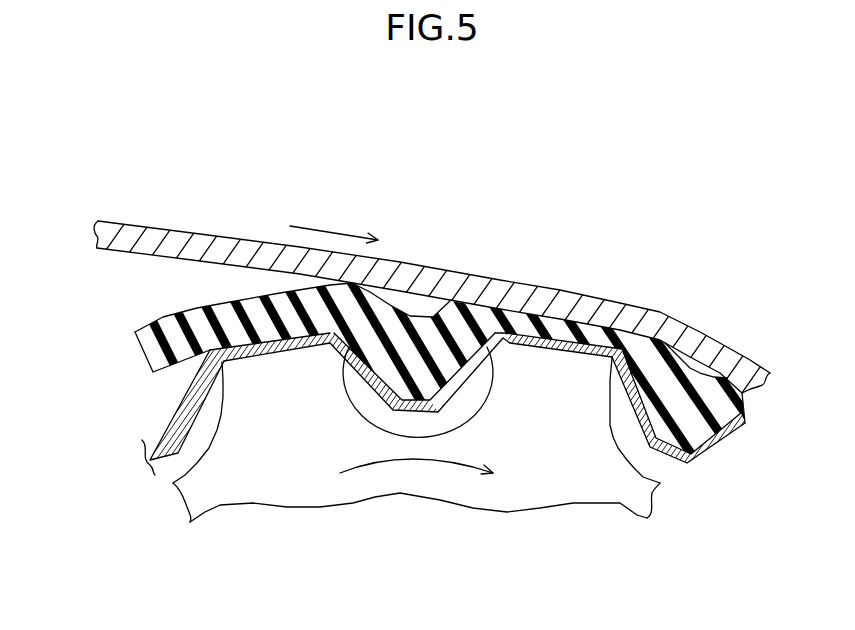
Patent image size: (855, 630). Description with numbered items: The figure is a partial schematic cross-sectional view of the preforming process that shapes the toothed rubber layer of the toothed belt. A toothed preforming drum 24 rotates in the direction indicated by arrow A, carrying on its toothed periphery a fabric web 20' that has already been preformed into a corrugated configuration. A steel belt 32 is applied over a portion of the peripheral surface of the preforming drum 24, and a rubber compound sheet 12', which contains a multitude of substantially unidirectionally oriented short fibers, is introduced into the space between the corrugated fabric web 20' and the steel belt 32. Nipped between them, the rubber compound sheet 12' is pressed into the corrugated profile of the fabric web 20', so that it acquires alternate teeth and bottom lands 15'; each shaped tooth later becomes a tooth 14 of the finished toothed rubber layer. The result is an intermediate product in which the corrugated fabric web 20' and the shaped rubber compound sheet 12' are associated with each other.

The steel belt 32 is at (168, 243).
The rubber compound sheet 12' is at (411, 370).
The fabric web 20' is at (449, 400).
The bottom land 15' is at (449, 400).
The tooth 14 is at (722, 453).
The toothed preforming drum 24 is at (612, 508).
The rotation direction of the toothed preforming drum A is at (413, 460).